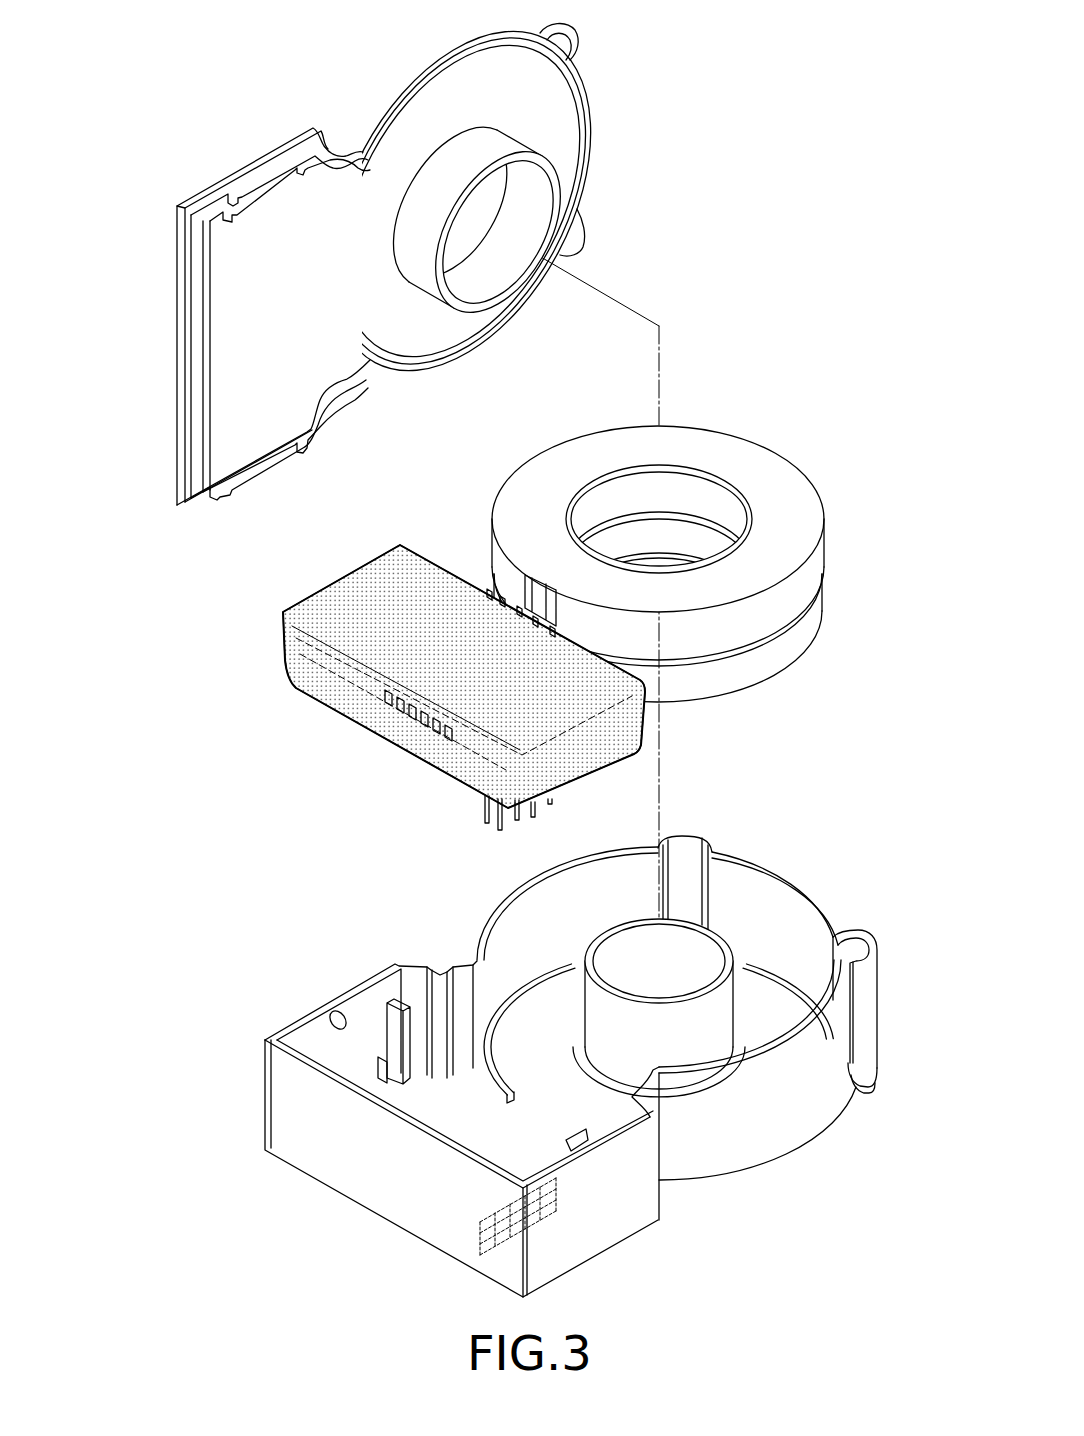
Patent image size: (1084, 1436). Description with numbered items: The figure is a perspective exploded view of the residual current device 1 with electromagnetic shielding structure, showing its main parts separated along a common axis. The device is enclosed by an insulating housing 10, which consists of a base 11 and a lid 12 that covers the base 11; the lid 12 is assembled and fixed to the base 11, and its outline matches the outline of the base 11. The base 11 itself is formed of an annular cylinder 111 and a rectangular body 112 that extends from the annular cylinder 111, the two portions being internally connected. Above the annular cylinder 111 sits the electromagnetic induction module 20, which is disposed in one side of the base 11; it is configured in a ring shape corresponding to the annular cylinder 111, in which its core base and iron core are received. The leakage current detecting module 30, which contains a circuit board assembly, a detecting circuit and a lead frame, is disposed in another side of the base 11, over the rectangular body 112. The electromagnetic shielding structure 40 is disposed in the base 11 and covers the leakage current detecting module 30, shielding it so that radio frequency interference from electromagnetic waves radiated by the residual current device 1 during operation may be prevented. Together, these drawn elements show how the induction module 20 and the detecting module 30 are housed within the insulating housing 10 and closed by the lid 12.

The residual current device 1 is at (700, 24).
The insulating housing 10 is at (143, 621).
The base 11 is at (326, 996).
The annular cylinder 111 is at (808, 1133).
The rectangular body 112 is at (605, 1252).
The lid 12 is at (178, 488).
The electromagnetic induction module 20 is at (734, 422).
The leakage current detecting module 30 is at (605, 765).
The electromagnetic shielding structure 40 is at (283, 645).